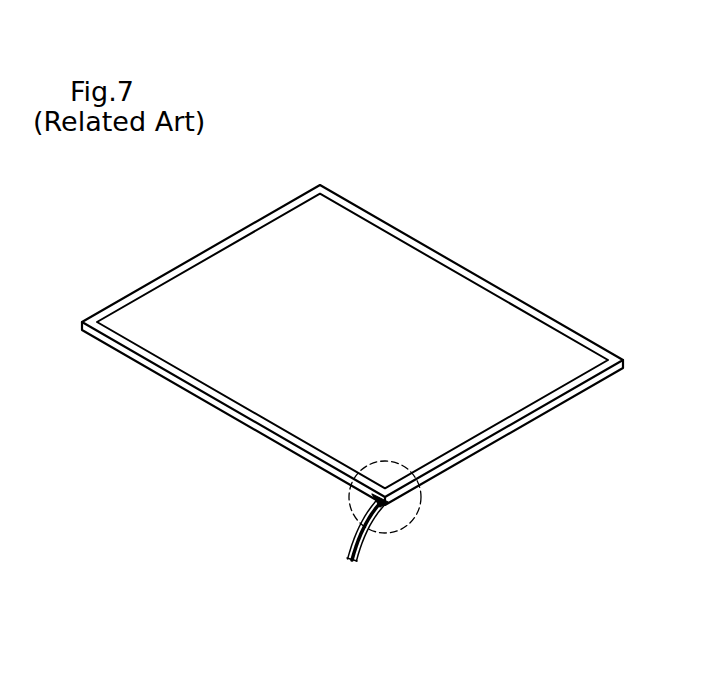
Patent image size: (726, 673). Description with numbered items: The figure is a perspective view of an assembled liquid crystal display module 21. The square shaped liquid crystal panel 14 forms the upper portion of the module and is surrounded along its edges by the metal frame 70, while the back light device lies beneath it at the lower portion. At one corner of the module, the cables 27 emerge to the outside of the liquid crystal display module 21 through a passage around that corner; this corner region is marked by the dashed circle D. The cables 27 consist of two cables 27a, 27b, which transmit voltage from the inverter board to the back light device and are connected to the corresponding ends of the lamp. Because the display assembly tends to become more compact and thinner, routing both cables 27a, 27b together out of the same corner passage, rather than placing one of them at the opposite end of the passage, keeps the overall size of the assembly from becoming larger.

The liquid crystal panel 14 is at (240, 273).
The liquid crystal display module 21 is at (370, 345).
The metal frame 70 is at (593, 374).
The cables 27 is at (353, 578).
The cable 27a is at (366, 545).
The cable 27b is at (351, 548).
The enlarged portion D is at (414, 524).